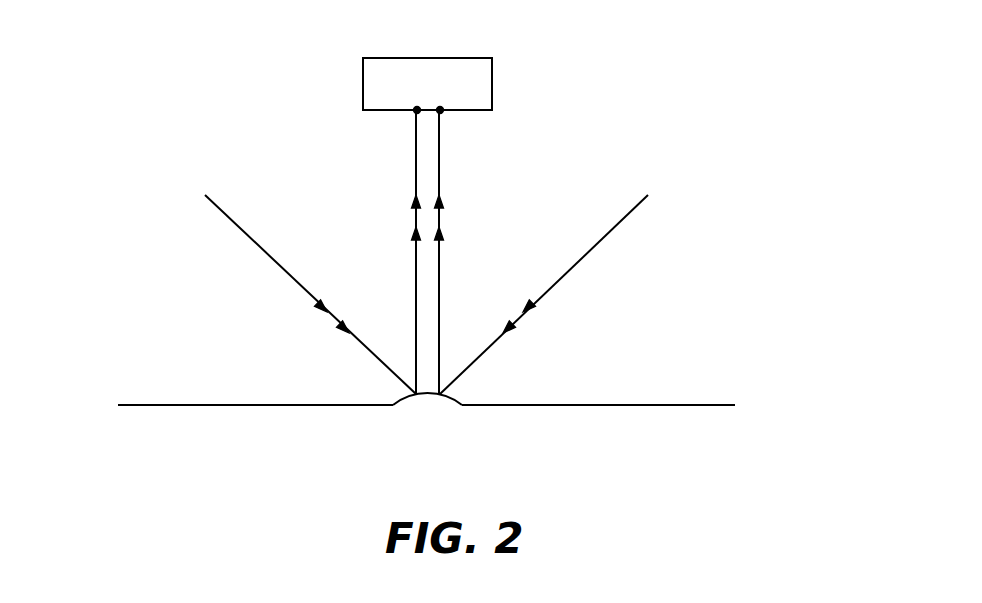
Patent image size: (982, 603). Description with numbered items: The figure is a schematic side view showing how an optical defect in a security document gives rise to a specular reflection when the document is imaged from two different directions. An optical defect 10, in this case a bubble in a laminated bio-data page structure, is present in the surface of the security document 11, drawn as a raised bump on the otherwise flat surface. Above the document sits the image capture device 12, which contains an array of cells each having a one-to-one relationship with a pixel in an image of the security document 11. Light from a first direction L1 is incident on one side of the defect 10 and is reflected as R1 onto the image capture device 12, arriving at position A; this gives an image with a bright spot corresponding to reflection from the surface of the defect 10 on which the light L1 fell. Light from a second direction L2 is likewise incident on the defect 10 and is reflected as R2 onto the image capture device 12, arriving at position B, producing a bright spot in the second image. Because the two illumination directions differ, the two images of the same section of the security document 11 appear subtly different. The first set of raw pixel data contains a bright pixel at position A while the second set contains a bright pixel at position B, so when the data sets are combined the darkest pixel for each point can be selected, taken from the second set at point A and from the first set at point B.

The optical defect 10 is at (402, 403).
The security document 11 is at (165, 380).
The image capture device 12 is at (492, 84).
The position A is at (416, 111).
The position B is at (441, 111).
The reflected light R1 is at (399, 252).
The reflected light R2 is at (456, 252).
The light from a first direction L1 is at (310, 294).
The light from a second direction L2 is at (544, 294).